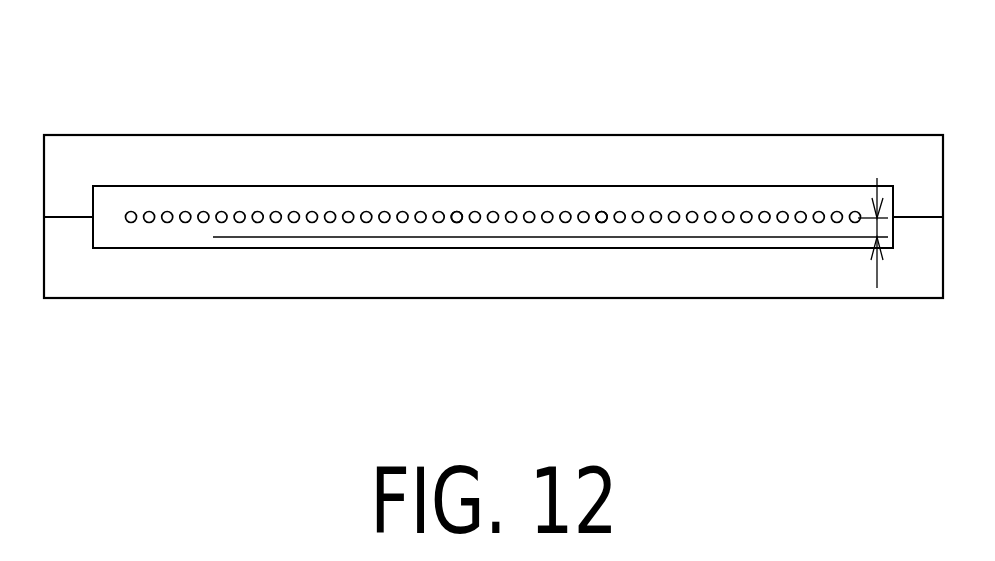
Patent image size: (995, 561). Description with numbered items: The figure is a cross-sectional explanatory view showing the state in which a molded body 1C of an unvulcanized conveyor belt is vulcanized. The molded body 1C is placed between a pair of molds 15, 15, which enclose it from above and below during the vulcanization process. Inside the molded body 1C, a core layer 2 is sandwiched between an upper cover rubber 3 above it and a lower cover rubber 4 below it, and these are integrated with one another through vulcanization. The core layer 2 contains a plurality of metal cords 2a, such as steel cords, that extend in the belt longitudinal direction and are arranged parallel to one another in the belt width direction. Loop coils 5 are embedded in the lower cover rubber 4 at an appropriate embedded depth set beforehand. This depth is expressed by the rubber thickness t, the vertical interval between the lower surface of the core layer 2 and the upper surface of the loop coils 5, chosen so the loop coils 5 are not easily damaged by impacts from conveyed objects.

The molded body 1C is at (820, 162).
The core layer 2 is at (715, 187).
The metal cords 2a is at (452, 212).
The upper cover rubber 3 is at (303, 200).
The lower cover rubber 4 is at (187, 233).
The loop coils 5 is at (293, 237).
The molds 15 is at (373, 158).
The rubber thickness t is at (878, 228).